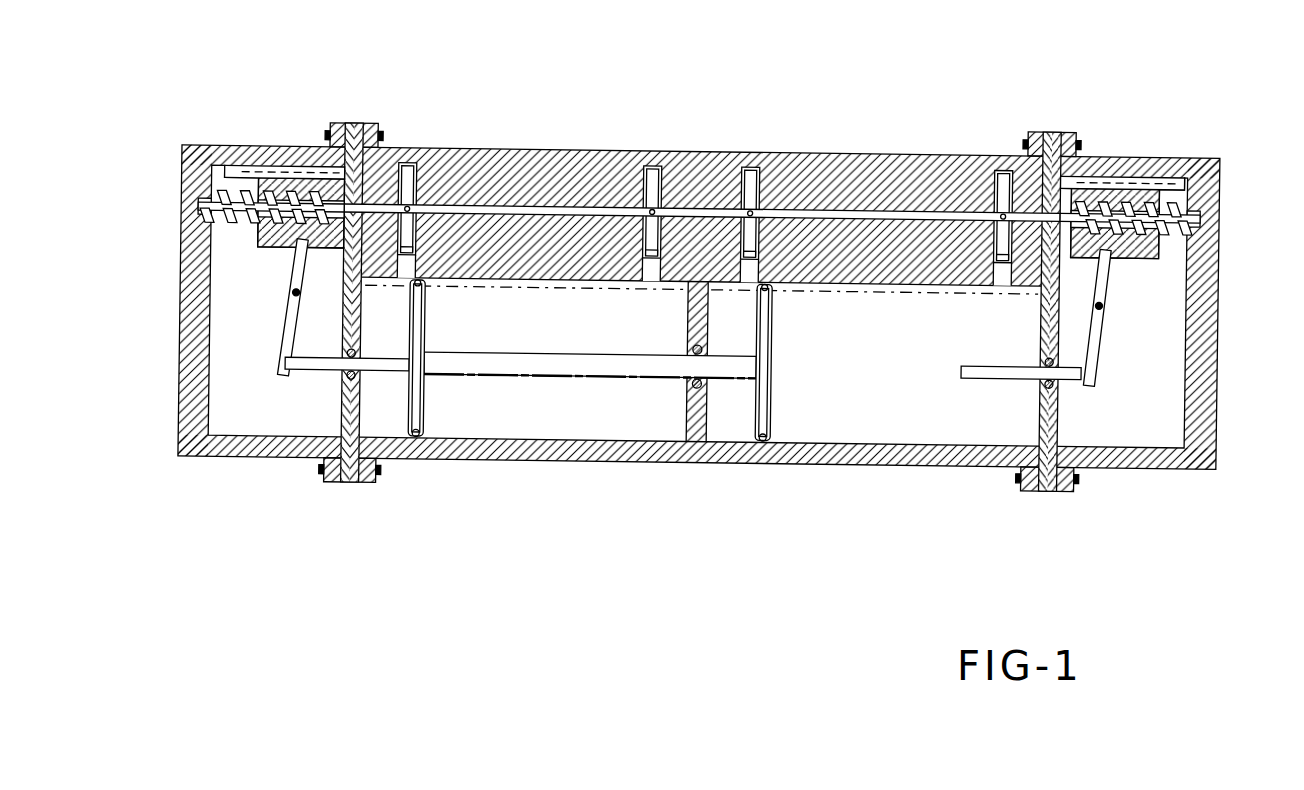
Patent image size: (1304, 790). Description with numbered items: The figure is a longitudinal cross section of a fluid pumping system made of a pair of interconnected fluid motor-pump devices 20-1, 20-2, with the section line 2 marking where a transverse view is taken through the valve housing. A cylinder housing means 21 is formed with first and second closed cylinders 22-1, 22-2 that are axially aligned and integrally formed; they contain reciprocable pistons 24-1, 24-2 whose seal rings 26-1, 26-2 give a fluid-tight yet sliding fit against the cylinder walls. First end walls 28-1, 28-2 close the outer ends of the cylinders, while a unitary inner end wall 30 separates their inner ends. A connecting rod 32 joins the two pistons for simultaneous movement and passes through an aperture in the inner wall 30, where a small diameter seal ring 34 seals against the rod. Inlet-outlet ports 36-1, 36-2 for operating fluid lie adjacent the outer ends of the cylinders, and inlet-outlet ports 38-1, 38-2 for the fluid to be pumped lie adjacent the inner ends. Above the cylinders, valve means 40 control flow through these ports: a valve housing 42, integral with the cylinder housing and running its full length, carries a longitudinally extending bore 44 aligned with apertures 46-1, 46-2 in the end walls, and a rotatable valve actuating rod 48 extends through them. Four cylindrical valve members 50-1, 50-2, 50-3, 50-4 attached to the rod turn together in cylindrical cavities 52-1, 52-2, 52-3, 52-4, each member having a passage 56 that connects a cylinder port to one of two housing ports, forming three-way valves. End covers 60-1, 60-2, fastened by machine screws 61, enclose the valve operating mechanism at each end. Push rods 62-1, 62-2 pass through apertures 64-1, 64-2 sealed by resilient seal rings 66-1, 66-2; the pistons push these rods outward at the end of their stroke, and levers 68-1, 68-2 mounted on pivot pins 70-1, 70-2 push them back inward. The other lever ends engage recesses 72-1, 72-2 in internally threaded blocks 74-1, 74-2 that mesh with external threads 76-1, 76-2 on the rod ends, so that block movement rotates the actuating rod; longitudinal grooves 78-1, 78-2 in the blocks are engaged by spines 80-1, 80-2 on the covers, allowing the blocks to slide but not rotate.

The section line 2- 2 is at (430, 86).
The fluid motor-pump device 20-1 is at (518, 520).
The fluid motor-pump device 20-2 is at (866, 528).
The cylinder housing means 21 is at (763, 462).
The first closed cylinder 22-1 is at (583, 445).
The second closed cylinder 22-2 is at (893, 445).
The piston 24-1 is at (425, 333).
The piston 24-2 is at (773, 338).
The seal ring 26-1 is at (425, 437).
The seal ring 26-2 is at (772, 436).
The first end wall 28-1 is at (352, 127).
The first end wall 28-2 is at (1058, 487).
The unitary inner end wall 30 is at (690, 415).
The connecting rod 32 is at (566, 378).
The small diameter seal ring 34 is at (692, 349).
The inlet-outlet port 36-1 is at (404, 283).
The inlet-outlet port 36-2 is at (1000, 280).
The inlet-outlet port 38-1 is at (651, 283).
The inlet-outlet port 38-2 is at (741, 283).
The valve means 40 is at (550, 118).
The valve housing 42 is at (516, 151).
The longitudinally extending bore 44 is at (845, 208).
The aperture 46-1 is at (399, 166).
The aperture 46-2 is at (1011, 205).
The rotatable valve actuating rod 48 is at (885, 212).
The valve member 50-1 is at (415, 192).
The valve member 50-2 is at (645, 190).
The valve member 50-3 is at (758, 192).
The valve member 50-4 is at (993, 190).
The cylindrical cavity 52-1 is at (448, 152).
The cylindrical cavity 52-2 is at (642, 166).
The cylindrical cavity 52-3 is at (742, 166).
The cylindrical cavity 52-4 is at (995, 166).
The passage 56 is at (406, 213).
The end cover 60-1 is at (205, 462).
The end cover 60-2 is at (1206, 463).
The machine screws 61 is at (324, 138).
The push rod 62-1 is at (308, 376).
The push rod 62-2 is at (962, 370).
The aperture 64-1 is at (356, 378).
The aperture 64-2 is at (1048, 380).
The resilient seal ring 66-1 is at (355, 357).
The resilient seal ring 66-2 is at (1048, 358).
The lever 68-1 is at (291, 333).
The lever 68-2 is at (1099, 348).
The pivot pin 70-1 is at (293, 297).
The pivot pin 70-2 is at (1101, 303).
The recess 72-1 is at (296, 265).
The recess 72-2 is at (1113, 258).
The internally threaded block 74-1 is at (283, 250).
The internally threaded block 74-2 is at (1158, 258).
The external threads 76-1 is at (260, 218).
The external threads 76-2 is at (1198, 222).
The longitudinal groove 78-1 is at (270, 171).
The longitudinal groove 78-2 is at (1105, 183).
The spine 80-1 is at (237, 170).
The spine 80-2 is at (1173, 180).